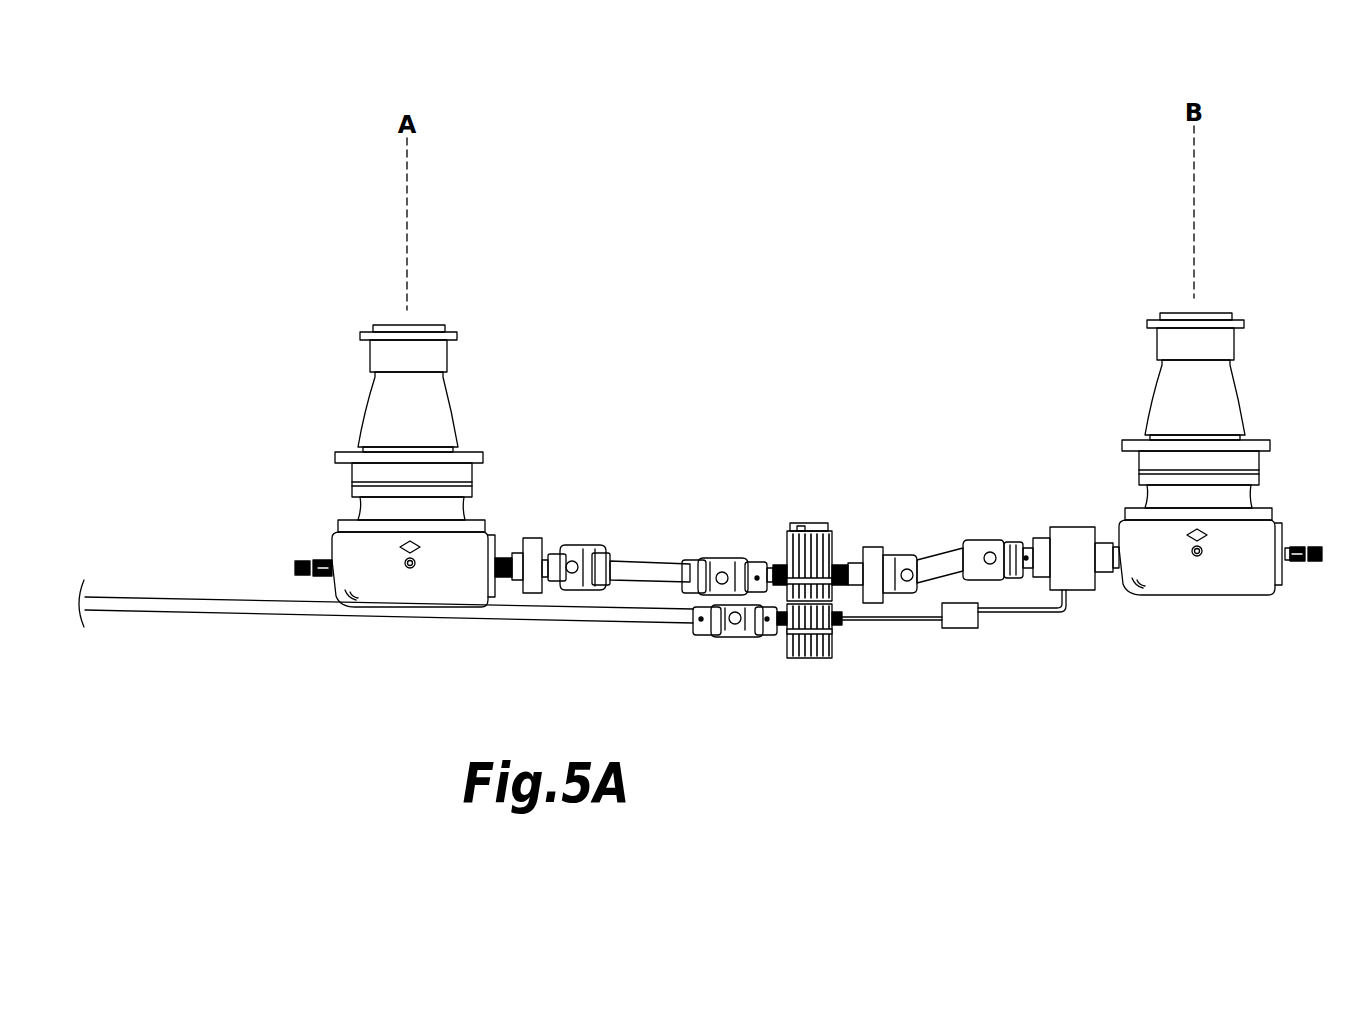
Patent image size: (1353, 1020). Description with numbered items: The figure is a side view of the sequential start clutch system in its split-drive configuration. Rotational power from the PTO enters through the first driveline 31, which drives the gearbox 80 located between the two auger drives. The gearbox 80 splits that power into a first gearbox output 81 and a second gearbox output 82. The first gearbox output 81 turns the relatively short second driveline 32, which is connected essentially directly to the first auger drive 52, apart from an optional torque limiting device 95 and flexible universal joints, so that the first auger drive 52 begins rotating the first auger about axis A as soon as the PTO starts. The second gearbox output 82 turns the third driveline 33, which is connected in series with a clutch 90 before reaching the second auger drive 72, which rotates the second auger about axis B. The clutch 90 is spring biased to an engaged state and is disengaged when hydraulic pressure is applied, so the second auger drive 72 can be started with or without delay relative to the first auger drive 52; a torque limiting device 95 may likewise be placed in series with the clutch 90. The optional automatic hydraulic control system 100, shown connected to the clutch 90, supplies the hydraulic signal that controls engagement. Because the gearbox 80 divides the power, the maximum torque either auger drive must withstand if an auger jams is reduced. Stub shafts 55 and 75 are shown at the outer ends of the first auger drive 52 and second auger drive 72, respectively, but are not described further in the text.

The first driveline 31 is at (597, 623).
The second driveline 32 is at (636, 560).
The third driveline 33 is at (950, 555).
The first auger drive 52 is at (410, 607).
The first winch input shaft 55 is at (301, 559).
The second auger drive 72 is at (1202, 596).
The second winch input shaft 75 is at (1302, 562).
The gearbox 80 is at (803, 658).
The first gearbox output 81 is at (772, 562).
The second gearbox output 82 is at (846, 560).
The clutch 90 is at (1075, 527).
The torque limiting device 95 is at (536, 538).
The automatic hydraulic control system 100 is at (957, 629).